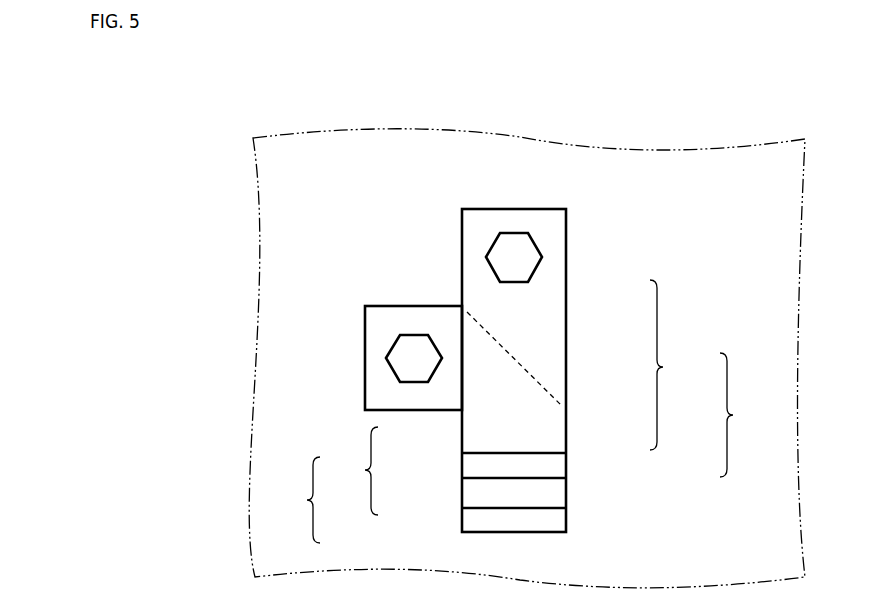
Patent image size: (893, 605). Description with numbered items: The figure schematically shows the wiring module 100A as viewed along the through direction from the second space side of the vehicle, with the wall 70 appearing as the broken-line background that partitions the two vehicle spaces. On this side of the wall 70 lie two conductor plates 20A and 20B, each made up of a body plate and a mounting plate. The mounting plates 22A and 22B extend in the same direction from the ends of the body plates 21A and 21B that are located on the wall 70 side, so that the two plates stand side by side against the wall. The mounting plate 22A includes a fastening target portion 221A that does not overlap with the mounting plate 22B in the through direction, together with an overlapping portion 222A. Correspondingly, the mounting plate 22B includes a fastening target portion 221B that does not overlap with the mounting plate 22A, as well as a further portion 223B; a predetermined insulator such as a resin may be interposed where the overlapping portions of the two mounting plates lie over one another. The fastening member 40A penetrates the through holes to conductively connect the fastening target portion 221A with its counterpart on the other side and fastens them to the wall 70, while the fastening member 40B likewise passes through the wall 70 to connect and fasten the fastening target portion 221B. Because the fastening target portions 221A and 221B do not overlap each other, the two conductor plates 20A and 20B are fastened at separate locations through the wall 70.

The wall 70 is at (682, 152).
The wiring module 100A is at (690, 282).
The fastening member 40A is at (514, 235).
The fastening member 40B is at (410, 337).
The conductor plate 20A is at (751, 415).
The body plate 21A is at (557, 465).
The mounting plate 22A is at (680, 365).
The fastening target portion 221A is at (555, 300).
The overlapping portion 222A is at (555, 430).
The conductor plate 20B is at (290, 500).
The body plate 21B is at (470, 518).
The mounting plate 22B is at (350, 471).
The fastening target portion 221B is at (403, 400).
The portion 223B is at (462, 492).